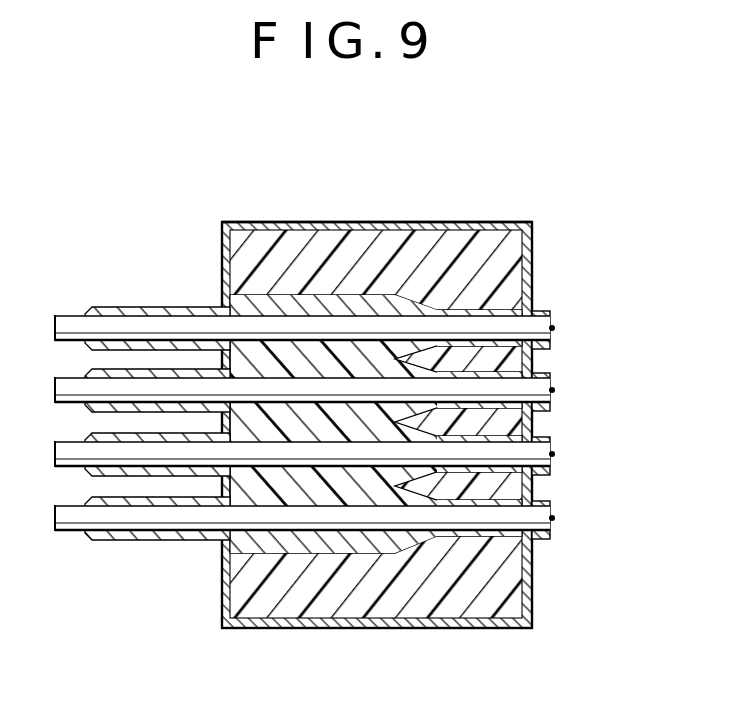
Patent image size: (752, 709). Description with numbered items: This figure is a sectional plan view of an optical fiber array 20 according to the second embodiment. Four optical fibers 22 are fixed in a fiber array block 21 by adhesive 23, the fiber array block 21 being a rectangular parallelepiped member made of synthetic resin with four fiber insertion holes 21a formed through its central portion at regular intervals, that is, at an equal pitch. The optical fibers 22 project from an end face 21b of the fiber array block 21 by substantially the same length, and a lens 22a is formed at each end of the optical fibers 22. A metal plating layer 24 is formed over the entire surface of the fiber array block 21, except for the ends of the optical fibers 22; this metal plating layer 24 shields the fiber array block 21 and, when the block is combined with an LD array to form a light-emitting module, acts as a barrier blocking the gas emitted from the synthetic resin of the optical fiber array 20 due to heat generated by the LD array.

The optical fiber array 20 is at (340, 135).
The fiber array block 21 is at (388, 221).
The fiber insertion holes 21a is at (484, 524).
The end face 21b is at (533, 245).
The optical fibers 22 is at (148, 298).
The lens 22a is at (557, 391).
The adhesive 23 is at (297, 298).
The metal plating layer 24 is at (457, 226).